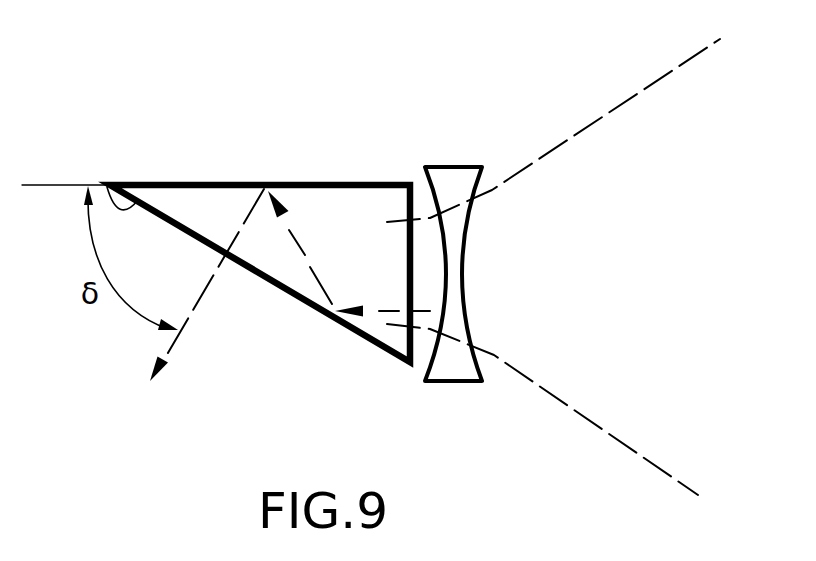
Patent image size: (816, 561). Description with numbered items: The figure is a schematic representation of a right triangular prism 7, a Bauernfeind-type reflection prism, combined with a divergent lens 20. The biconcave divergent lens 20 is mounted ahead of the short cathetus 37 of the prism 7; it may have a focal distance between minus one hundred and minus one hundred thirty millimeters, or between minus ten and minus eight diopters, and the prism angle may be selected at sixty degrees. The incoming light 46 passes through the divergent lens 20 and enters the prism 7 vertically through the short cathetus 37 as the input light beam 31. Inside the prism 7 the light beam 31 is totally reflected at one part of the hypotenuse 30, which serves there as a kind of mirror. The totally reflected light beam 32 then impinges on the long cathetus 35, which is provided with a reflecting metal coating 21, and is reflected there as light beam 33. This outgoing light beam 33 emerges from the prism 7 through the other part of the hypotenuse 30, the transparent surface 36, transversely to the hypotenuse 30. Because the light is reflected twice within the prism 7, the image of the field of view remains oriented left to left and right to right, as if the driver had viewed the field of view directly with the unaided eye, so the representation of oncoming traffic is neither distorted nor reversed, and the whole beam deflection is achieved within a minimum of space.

The right triangular prism 7 is at (354, 209).
The divergent lens 20 is at (455, 240).
The reflecting metal coating 21 is at (307, 183).
The hypotenuse 30 is at (273, 288).
The input light beam 31 is at (382, 311).
The totally reflected light beam 32 is at (305, 251).
The outgoing light beam 33 is at (200, 300).
The long cathetus 35 is at (180, 183).
The transparent surface 36 is at (107, 186).
The short cathetus 37 is at (394, 183).
The incoming light 46 is at (563, 403).